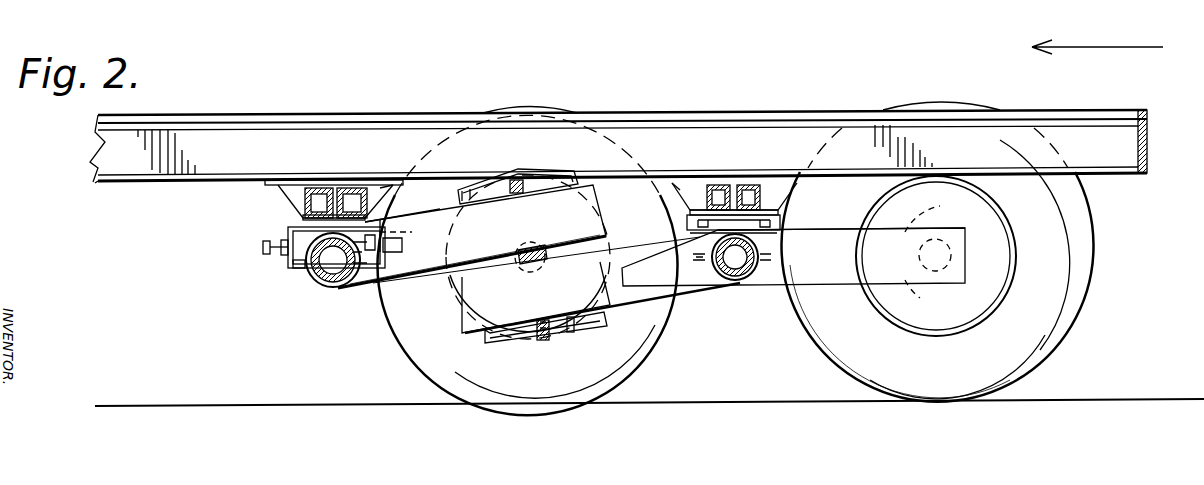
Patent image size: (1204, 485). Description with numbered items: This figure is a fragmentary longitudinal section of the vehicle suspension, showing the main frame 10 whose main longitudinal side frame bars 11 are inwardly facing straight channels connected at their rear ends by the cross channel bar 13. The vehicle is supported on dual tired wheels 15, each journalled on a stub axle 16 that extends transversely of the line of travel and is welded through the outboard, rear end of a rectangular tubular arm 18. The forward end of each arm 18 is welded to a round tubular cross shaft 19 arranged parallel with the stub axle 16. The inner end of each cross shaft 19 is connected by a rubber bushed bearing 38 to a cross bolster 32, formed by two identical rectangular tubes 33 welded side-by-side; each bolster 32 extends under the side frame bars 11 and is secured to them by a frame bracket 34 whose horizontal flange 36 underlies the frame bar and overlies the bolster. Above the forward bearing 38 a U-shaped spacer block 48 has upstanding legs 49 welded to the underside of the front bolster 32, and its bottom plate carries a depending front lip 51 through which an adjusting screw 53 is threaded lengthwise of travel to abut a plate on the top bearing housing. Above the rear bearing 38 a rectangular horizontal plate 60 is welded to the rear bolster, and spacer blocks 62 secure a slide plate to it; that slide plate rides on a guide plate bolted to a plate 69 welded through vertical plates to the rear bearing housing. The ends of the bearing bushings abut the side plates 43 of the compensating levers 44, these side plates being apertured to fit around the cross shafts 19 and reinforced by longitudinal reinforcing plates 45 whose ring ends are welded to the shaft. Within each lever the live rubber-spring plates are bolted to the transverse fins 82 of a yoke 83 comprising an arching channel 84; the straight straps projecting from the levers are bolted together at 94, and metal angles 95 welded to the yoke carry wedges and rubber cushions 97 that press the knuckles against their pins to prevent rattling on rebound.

The main frame 10 is at (97, 207).
The main longitudinal side frame bars 11 is at (100, 140).
The cross channel bar 13 is at (1150, 125).
The wheels 15 is at (530, 108).
The stub axle 16 is at (920, 298).
The arm 18 is at (905, 218).
The cross shaft 19 is at (335, 288).
The cross bolster 32 is at (270, 204).
The tubes 33 is at (350, 188).
The frame bracket 34 is at (301, 169).
The horizontal flange 36 is at (385, 184).
The bearing 38 is at (299, 282).
The side plates 43 is at (597, 193).
The compensating levers 44 is at (452, 309).
The reinforcing plates 45 is at (443, 250).
The spacer block 48 is at (289, 222).
The upstanding legs 49 is at (440, 212).
The front lip 51 is at (283, 250).
The adjusting screw 53 is at (272, 243).
The horizontal plate 60 is at (790, 216).
The spacer blocks 62 is at (790, 226).
The plate 69 is at (785, 240).
The transverse fins 82 is at (483, 183).
The yoke 83 is at (552, 162).
The arching channel 84 is at (586, 330).
The bolts 94 is at (540, 248).
The angles 95 is at (517, 173).
The rubber cushions 97 is at (542, 320).